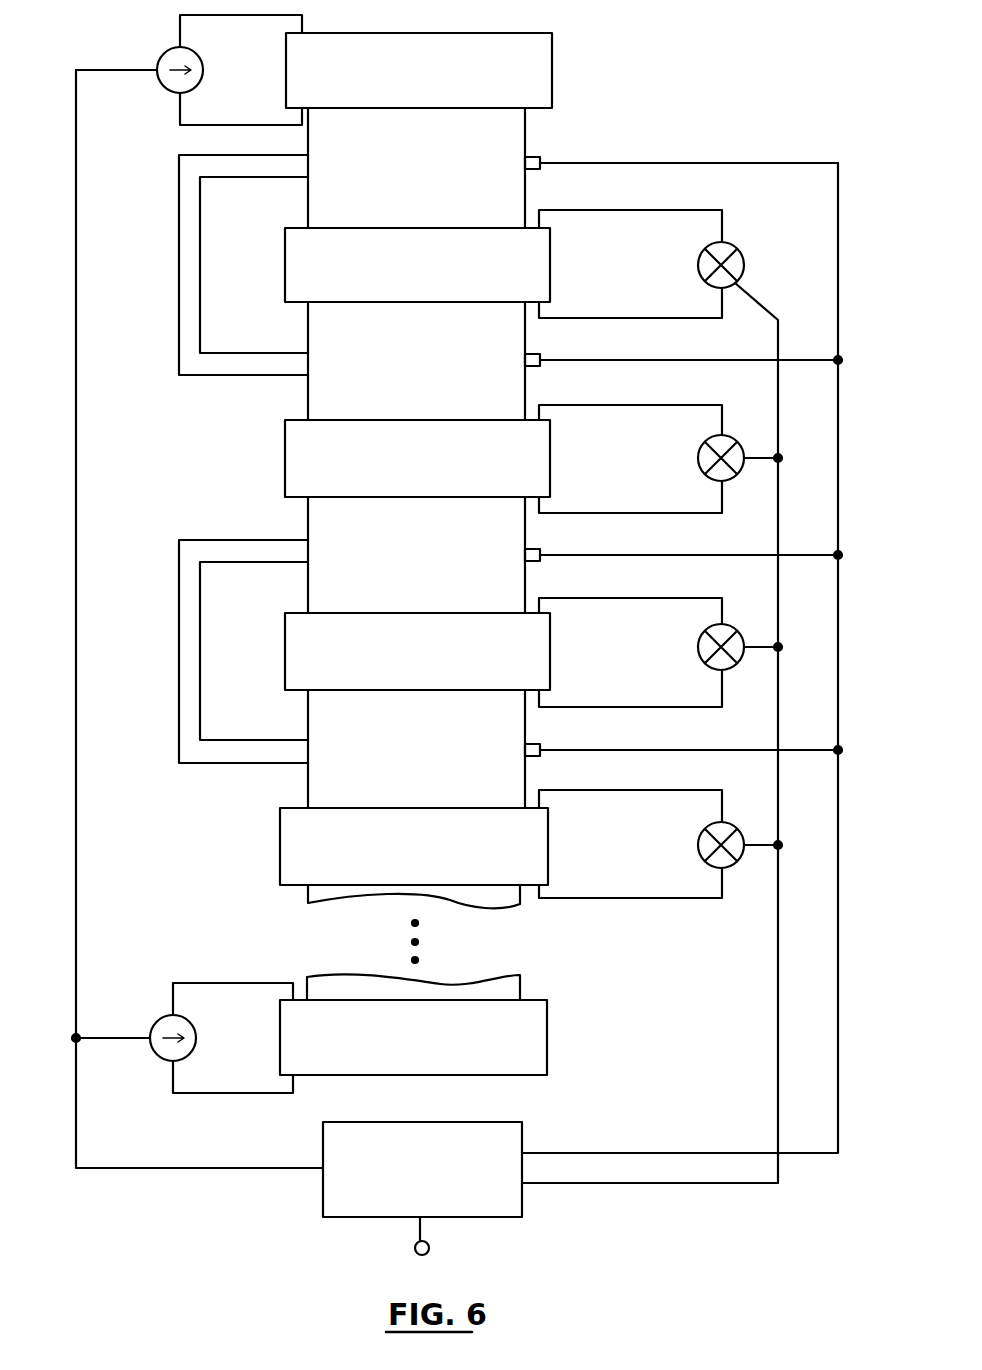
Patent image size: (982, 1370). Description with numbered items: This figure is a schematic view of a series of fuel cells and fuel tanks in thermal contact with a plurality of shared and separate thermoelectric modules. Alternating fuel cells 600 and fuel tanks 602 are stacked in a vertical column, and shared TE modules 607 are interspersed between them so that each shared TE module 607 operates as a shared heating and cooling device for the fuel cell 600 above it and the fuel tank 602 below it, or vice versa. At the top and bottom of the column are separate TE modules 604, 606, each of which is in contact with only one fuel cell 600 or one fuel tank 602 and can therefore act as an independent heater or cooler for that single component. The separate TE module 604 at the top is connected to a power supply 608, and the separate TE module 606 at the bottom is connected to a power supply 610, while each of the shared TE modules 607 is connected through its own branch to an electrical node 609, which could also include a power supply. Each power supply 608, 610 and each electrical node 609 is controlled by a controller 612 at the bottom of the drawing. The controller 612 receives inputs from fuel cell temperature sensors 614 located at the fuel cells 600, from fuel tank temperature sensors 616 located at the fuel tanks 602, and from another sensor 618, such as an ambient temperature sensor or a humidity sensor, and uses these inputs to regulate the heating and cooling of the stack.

The fuel cell 600 is at (512, 140).
The fuel tank 602 is at (325, 388).
The separate TE module 604 is at (537, 60).
The separate TE module 606 is at (530, 1027).
The shared TE module 607 is at (305, 275).
The power supply 608 is at (165, 57).
The electrical node 609 is at (748, 265).
The power supply 610 is at (157, 1022).
The controller 612 is at (510, 1130).
The fuel cell temperature sensor 614 is at (540, 170).
The fuel tank temperature sensor 616 is at (540, 356).
The other sensor 618 is at (432, 1250).